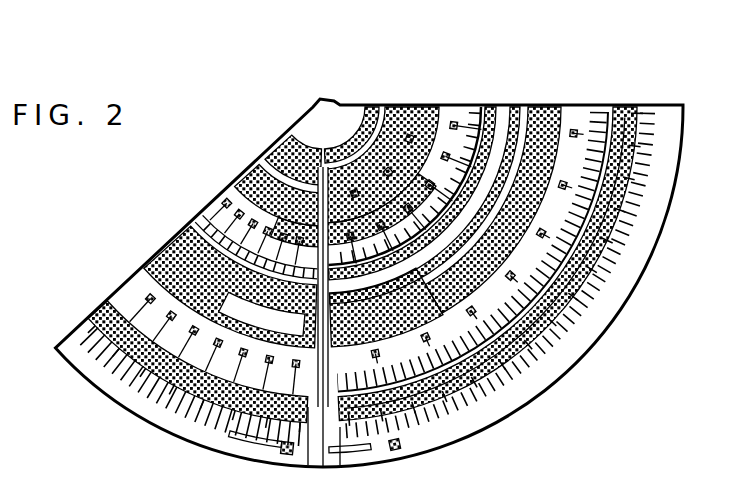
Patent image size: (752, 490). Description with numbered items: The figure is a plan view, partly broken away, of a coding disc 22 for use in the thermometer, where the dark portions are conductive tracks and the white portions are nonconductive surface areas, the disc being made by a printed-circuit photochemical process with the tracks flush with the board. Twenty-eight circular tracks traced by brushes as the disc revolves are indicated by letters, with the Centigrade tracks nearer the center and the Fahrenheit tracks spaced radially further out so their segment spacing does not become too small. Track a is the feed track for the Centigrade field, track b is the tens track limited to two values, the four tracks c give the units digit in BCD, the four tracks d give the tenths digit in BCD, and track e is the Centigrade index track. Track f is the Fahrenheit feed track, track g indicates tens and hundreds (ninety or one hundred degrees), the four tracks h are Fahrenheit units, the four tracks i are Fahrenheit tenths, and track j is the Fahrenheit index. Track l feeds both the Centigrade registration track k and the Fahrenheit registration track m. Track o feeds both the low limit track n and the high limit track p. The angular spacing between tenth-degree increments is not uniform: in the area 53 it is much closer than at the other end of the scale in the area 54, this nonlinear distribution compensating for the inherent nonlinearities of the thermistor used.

The coding disc 22 is at (166, 296).
The area of closer spacing 53 is at (484, 278).
The area of wider spacing 54 is at (188, 369).
The feed track a is at (352, 85).
The tens track b is at (382, 137).
The units tracks c is at (388, 103).
The tenths tracks d is at (413, 136).
The index track e is at (406, 147).
The feed track f is at (414, 144).
The tens and hundreds track g is at (425, 167).
The units tracks h is at (446, 177).
The tenths tracks i is at (482, 185).
The index track j is at (472, 200).
The registration track k is at (487, 225).
The feed track l is at (491, 214).
The registration track m is at (502, 230).
The low limit track n is at (242, 457).
The feed track o is at (345, 464).
The high limit track p is at (373, 467).